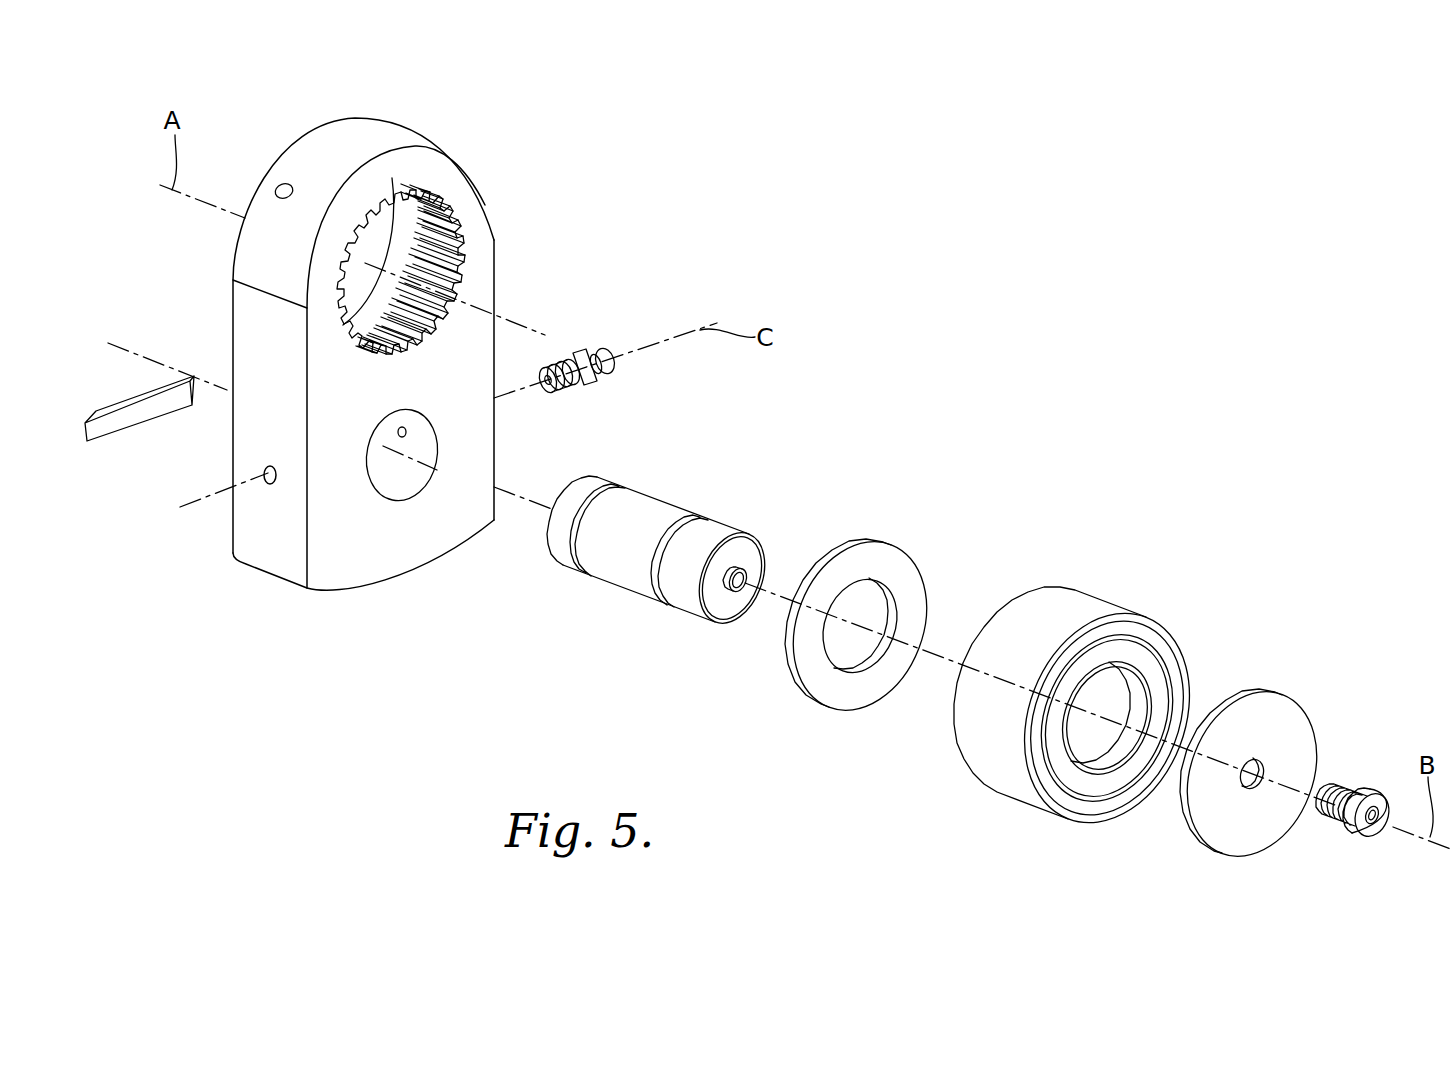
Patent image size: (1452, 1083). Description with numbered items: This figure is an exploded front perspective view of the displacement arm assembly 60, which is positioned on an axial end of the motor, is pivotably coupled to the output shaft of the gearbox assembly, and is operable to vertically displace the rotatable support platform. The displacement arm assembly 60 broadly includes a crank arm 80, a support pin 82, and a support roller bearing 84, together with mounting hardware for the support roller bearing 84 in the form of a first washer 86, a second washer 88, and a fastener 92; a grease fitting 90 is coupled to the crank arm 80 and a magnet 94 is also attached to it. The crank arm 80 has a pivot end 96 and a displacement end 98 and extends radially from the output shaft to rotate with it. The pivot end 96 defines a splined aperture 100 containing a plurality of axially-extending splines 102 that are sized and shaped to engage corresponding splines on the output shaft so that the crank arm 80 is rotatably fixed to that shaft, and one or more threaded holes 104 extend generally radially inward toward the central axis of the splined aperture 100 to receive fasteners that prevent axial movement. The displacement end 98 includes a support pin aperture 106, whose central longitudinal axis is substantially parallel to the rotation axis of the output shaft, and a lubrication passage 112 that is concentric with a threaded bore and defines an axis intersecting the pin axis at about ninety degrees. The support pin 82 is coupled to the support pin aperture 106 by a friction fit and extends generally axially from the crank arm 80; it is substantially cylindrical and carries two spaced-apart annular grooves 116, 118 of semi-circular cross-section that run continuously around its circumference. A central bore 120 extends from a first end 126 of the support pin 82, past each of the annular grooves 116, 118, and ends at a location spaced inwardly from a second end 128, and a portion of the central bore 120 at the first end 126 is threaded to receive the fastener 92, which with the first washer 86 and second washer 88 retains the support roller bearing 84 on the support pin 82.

The displacement arm assembly 60 is at (672, 158).
The crank arm 80 is at (497, 278).
The support pin 82 is at (665, 500).
The support roller bearing 84 is at (1138, 612).
The first washer 86 is at (900, 553).
The second washer 88 is at (1272, 688).
The grease fitting 90 is at (600, 350).
The fastener 92 is at (1365, 832).
The magnet 94 is at (128, 426).
The pivot end 96 is at (321, 110).
The displacement end 98 is at (284, 605).
The splined aperture 100 is at (392, 170).
The splines 102 is at (465, 238).
The threaded hole 104 is at (282, 183).
The support pin aperture 106 is at (391, 497).
The lubrication passage 112 is at (403, 430).
The annular groove 116 is at (612, 486).
The annular groove 118 is at (696, 516).
The central bore 120 is at (747, 567).
The first end 126 is at (708, 645).
The second end 128 is at (538, 586).